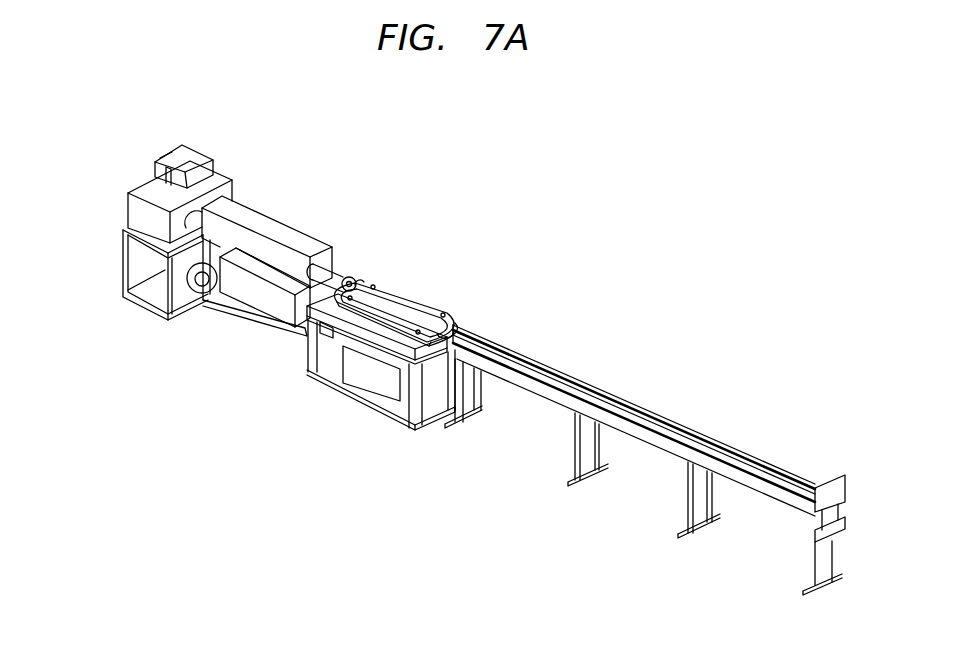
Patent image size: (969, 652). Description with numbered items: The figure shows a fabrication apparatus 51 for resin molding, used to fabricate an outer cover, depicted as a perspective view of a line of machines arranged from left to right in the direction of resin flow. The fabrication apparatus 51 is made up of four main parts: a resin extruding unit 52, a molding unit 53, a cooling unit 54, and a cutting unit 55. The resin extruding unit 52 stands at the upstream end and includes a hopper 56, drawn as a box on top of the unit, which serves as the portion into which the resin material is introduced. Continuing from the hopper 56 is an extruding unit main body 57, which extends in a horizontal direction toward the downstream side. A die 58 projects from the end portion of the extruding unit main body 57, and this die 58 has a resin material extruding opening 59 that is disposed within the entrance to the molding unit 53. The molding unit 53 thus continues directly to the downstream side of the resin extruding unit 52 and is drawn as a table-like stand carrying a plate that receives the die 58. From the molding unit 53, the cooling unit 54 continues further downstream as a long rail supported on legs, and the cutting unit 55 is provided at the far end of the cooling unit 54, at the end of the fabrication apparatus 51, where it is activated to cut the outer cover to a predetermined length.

The fabrication apparatus 51 is at (578, 263).
The resin extruding unit 52 is at (322, 205).
The molding unit 53 is at (431, 278).
The cooling unit 54 is at (643, 410).
The cutting unit 55 is at (808, 543).
The hopper 56 is at (198, 153).
The extruding unit main body 57 is at (318, 250).
The die 58 is at (350, 275).
The resin material extruding opening 59 is at (367, 278).